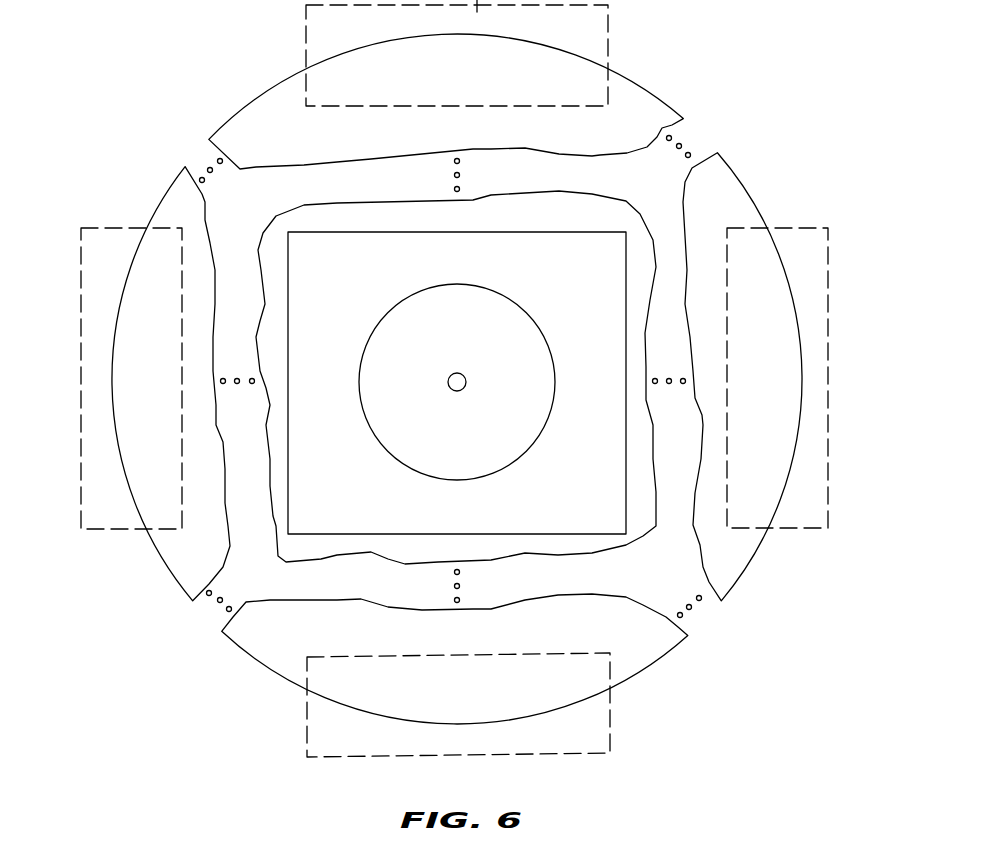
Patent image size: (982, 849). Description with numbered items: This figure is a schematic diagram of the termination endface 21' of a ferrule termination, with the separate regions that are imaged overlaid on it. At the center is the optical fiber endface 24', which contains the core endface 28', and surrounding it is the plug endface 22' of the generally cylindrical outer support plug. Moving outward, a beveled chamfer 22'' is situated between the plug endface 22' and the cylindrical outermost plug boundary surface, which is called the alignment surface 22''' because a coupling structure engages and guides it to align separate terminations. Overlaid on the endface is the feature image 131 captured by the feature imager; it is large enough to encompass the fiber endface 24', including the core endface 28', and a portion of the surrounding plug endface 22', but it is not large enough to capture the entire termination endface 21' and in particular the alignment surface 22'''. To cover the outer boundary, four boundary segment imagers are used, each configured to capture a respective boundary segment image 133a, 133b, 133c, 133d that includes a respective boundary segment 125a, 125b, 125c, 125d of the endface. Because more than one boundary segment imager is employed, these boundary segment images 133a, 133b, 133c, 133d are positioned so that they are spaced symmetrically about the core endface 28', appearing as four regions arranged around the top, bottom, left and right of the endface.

The termination endface 21' is at (457, 394).
The plug endface 22' is at (456, 377).
The beveled chamfer 22'' is at (464, 694).
The alignment surface 22''' is at (674, 693).
The optical fiber endface 24' is at (457, 382).
The core endface 28' is at (461, 355).
The boundary segment 125a is at (113, 362).
The boundary segment 125b is at (371, 46).
The boundary segment 125c is at (797, 312).
The boundary segment 125d is at (597, 693).
The feature image 131 is at (503, 232).
The boundary segment image 133a is at (80, 398).
The boundary segment image 133b is at (457, 55).
The boundary segment image 133c is at (828, 398).
The boundary segment image 133d is at (542, 753).